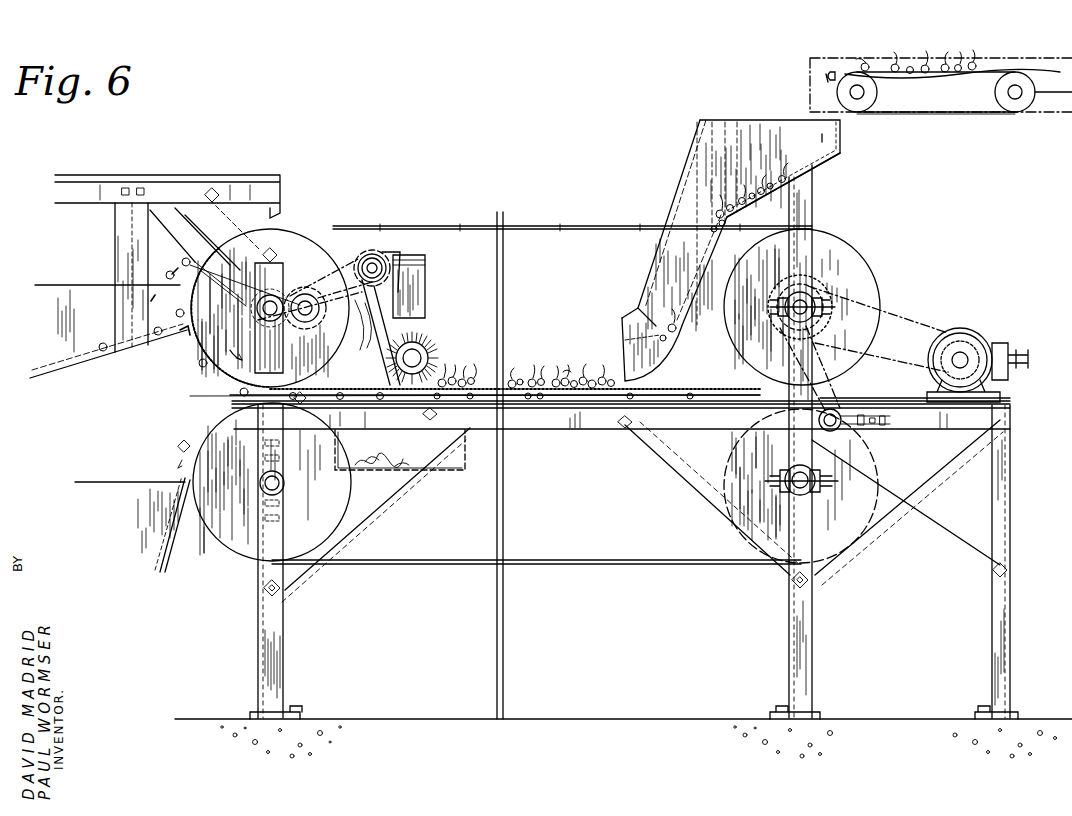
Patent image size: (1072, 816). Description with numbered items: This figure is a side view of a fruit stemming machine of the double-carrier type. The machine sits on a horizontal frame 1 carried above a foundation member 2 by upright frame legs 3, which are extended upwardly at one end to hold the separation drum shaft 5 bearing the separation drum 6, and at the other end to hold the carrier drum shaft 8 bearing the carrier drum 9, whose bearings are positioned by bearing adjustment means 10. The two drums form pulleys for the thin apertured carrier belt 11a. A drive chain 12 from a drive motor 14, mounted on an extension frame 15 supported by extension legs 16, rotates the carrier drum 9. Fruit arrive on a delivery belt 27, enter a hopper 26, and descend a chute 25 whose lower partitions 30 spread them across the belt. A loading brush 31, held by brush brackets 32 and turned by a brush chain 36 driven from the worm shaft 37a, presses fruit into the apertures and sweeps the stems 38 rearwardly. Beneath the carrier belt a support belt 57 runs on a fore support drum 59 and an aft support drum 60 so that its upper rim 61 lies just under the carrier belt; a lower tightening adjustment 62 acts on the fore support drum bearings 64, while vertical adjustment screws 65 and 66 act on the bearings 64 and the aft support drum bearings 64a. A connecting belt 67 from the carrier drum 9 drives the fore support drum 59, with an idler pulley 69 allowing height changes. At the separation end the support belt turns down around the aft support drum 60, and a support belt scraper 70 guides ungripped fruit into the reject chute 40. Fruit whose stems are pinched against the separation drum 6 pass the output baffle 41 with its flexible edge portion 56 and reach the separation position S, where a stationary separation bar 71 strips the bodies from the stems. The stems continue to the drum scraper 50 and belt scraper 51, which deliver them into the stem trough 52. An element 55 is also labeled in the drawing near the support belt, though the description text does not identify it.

The horizontal frame 1 is at (540, 432).
The foundation member 2 is at (575, 719).
The upright frame legs 3 is at (285, 637).
The separation drum shaft 5 is at (262, 314).
The separation drum 6 is at (298, 250).
The carrier drum shaft 8 is at (812, 302).
The carrier drum 9 is at (830, 252).
The bearing adjustment means 10 is at (822, 308).
The carrier belt 11a is at (690, 395).
The drive chain 12 is at (912, 318).
The drive motor 14 is at (985, 335).
The extension frame 15 is at (918, 430).
The extension legs 16 is at (1000, 592).
The chute 25 is at (672, 250).
The hopper 26 is at (830, 143).
The delivery belt 27 is at (920, 80).
The lower partitions 30 is at (636, 306).
The loading brush 31 is at (425, 350).
The brush brackets 32 is at (425, 282).
The brush chain 36 is at (412, 300).
The worm shaft 37a is at (386, 290).
The stems 38 is at (512, 378).
The reject chute 40 is at (112, 518).
The output baffle 41 is at (165, 340).
The drum scraper 50 is at (348, 282).
The belt scraper 51 is at (374, 262).
The stem trough 52 is at (398, 268).
The tray 55 is at (440, 470).
The flexible edge portion 56 is at (185, 340).
The support belt 57 is at (605, 425).
The fore support drum 59 is at (740, 497).
The aft support drum 60 is at (375, 478).
The upper rim 61 is at (536, 378).
The lower tightening adjustment 62 is at (812, 490).
The fore support drum bearings 64 is at (790, 468).
The aft support drum bearings 64a is at (285, 483).
The vertical adjustment screw 65 is at (780, 545).
The vertical adjustment screw 66 is at (262, 538).
The connecting belt 67 is at (845, 397).
The idler pulley 69 is at (845, 425).
The support belt scraper 70 is at (178, 478).
The separation bar 71 is at (220, 225).
The separation position S is at (182, 262).